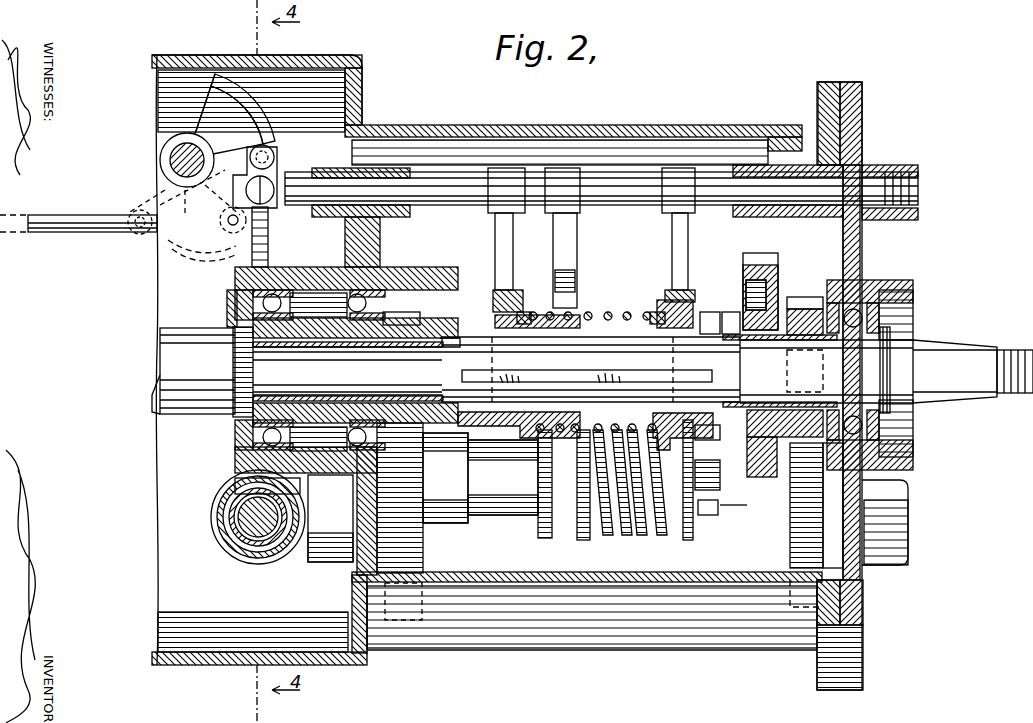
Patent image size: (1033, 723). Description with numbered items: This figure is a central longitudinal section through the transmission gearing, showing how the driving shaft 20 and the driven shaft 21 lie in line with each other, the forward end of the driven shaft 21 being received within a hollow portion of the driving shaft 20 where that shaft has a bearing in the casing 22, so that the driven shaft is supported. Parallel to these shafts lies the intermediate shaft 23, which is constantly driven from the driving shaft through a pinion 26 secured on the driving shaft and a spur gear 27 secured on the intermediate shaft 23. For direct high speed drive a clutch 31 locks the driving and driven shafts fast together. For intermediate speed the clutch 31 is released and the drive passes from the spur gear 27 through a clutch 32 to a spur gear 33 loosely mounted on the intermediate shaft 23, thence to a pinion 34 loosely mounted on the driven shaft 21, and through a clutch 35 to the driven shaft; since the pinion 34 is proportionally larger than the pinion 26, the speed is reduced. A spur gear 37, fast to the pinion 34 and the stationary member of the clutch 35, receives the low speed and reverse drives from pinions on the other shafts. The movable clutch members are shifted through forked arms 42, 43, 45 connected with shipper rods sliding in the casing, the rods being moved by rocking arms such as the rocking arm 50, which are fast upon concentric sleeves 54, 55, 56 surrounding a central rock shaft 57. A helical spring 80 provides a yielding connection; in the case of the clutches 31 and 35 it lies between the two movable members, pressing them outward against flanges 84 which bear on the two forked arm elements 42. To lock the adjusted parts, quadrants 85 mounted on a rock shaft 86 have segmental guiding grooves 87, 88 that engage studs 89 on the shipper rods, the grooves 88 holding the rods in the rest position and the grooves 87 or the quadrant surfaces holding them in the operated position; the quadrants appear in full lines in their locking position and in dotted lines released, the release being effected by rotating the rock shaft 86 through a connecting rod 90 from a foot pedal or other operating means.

The driving shaft 20 is at (202, 372).
The driven shaft 21 is at (643, 371).
The casing 22 is at (378, 262).
The intermediate shaft 23 is at (514, 522).
The pinion 26 is at (410, 312).
The spur gear 27 is at (420, 557).
The clutch 31 is at (462, 330).
The clutch 32 is at (735, 520).
The spur gear 33 is at (790, 552).
The pinion 34 is at (805, 297).
The clutch 35 is at (722, 313).
The spur gear 37 is at (760, 256).
The forked arm 42 is at (496, 250).
The forked arm 43 is at (577, 248).
The forked arm 45 is at (618, 198).
The rocking arm 50 is at (268, 253).
The concentric sleeve 54 is at (236, 552).
The concentric sleeve 55 is at (262, 566).
The concentric sleeve 56 is at (226, 529).
The central rock shaft 57 is at (220, 512).
The helical spring 80 is at (598, 316).
The flange 84 is at (530, 312).
The quadrant 85 is at (215, 74).
The rock shaft 86 is at (172, 159).
The segmental guiding groove 87 is at (229, 120).
The segmental guiding groove 88 is at (243, 109).
The stud 89 is at (276, 156).
The connecting rod 90 is at (78, 232).